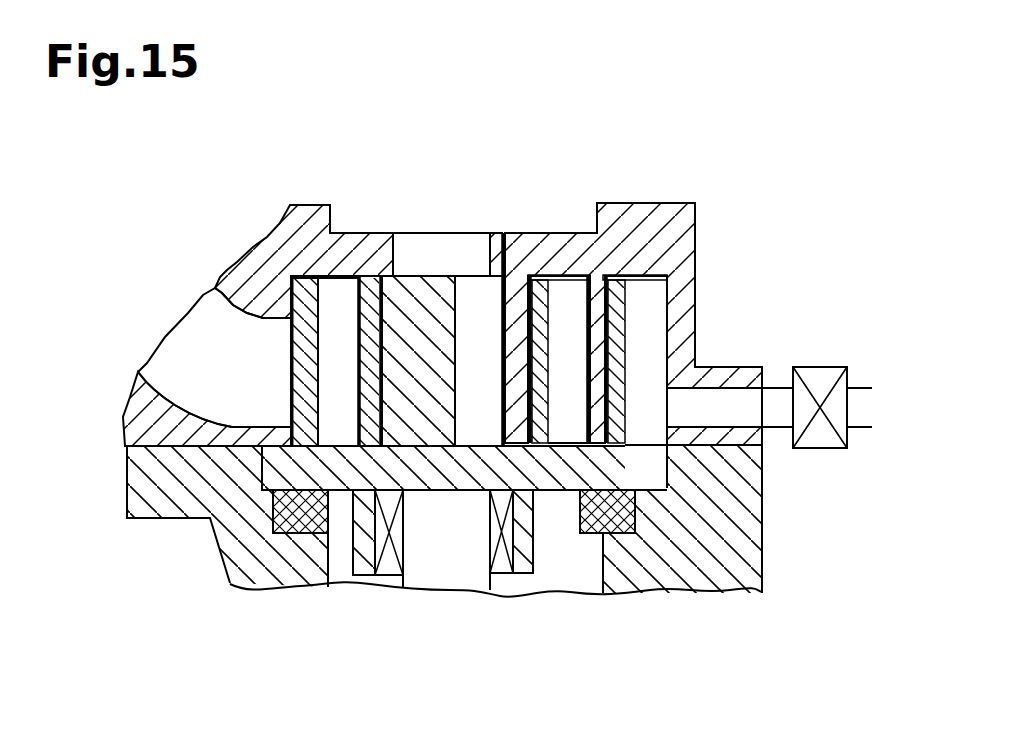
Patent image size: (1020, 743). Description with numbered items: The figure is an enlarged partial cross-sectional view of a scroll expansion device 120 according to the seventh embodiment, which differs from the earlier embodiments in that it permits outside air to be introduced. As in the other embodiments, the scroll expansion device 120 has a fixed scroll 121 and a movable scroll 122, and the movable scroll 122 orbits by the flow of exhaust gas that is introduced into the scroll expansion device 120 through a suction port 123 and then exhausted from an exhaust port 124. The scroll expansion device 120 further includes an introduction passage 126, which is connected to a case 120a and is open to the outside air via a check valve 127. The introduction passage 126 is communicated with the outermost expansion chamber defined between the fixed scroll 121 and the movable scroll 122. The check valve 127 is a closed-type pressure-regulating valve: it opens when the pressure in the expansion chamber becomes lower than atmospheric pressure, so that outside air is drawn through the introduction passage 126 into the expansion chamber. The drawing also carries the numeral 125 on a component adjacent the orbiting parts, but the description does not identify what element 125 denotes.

The scroll expansion device 120 is at (832, 266).
The case 120a is at (697, 220).
The fixed scroll 121 is at (358, 364).
The movable scroll 122 is at (542, 302).
The suction port 123 is at (398, 258).
The exhaust port 124 is at (210, 291).
The bearing 125 is at (497, 596).
The introduction passage 126 is at (718, 396).
The check valve 127 is at (818, 450).